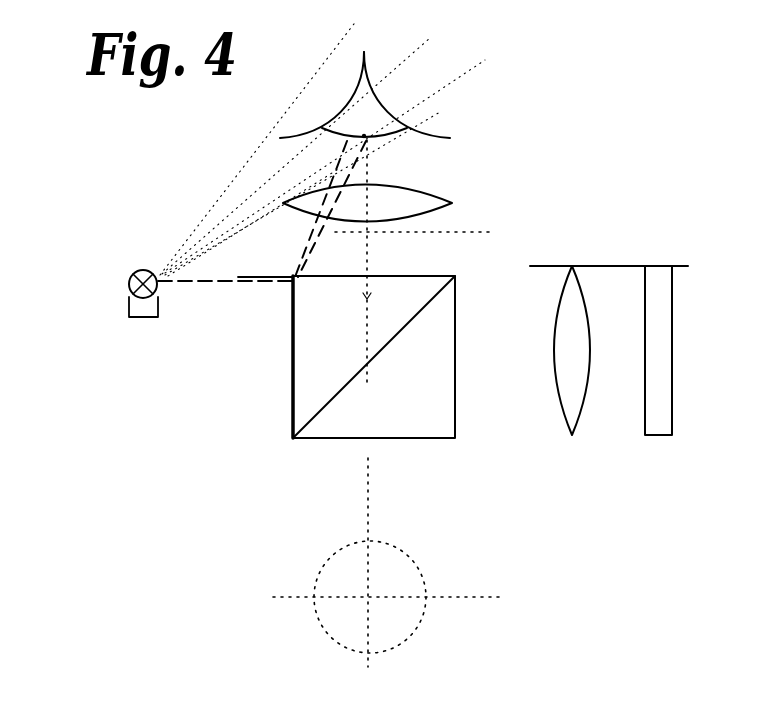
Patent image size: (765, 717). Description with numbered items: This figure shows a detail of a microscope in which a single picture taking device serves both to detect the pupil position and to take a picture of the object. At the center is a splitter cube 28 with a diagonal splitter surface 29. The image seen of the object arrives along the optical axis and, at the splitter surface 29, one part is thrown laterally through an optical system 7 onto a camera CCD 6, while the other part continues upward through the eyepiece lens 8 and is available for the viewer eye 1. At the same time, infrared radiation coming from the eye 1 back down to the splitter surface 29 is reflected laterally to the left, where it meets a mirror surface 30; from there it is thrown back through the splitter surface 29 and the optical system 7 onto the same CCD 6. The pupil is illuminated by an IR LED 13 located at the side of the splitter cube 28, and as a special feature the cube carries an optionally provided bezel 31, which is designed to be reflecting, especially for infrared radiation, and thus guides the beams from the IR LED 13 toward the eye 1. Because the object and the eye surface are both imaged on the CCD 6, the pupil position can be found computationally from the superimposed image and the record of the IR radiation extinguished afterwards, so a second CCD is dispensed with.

The viewer eye 1 is at (368, 103).
The eyepiece lens 8 is at (405, 197).
The IR LED 13 is at (138, 268).
The splitter cube 28 is at (262, 372).
The splitter surface 29 is at (348, 382).
The mirror surface 30 is at (293, 412).
The bezel 31 is at (292, 281).
The optical system 7 is at (572, 397).
The CCD 6 is at (655, 405).